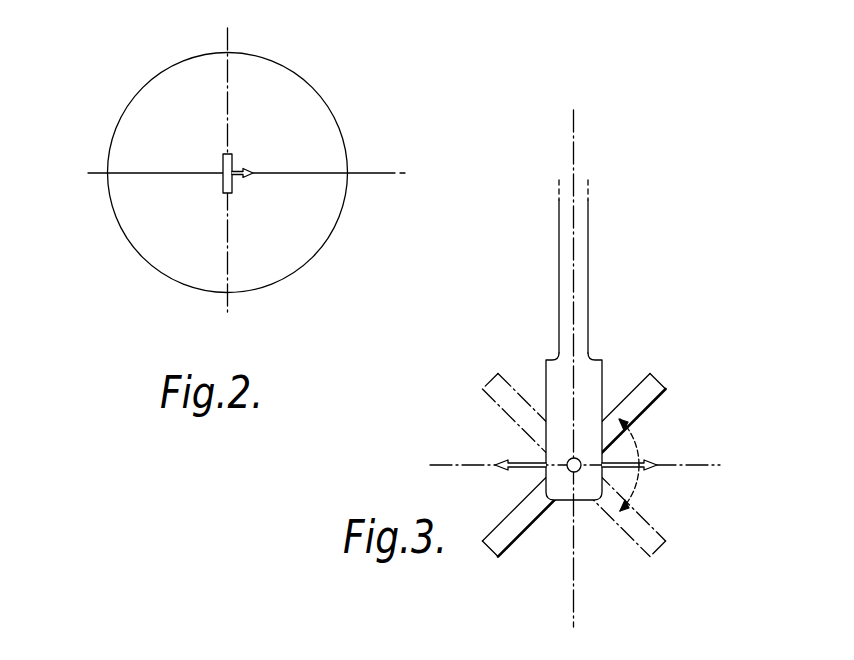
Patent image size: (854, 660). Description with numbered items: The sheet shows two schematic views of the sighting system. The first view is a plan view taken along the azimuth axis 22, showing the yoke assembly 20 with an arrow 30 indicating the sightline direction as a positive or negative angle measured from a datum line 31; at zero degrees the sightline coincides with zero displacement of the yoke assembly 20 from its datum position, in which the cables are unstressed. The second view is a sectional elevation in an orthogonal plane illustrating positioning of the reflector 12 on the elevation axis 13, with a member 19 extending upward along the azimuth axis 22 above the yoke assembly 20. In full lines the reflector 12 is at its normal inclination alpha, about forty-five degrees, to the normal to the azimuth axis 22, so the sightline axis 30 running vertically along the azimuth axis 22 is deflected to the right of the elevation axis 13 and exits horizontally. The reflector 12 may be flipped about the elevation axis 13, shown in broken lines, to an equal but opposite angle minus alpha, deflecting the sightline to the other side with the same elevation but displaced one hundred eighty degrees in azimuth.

In FIG. 3, the reflector 12 is at (660, 378).
In FIG. 3, the elevation axis 13 is at (572, 473).
In FIG. 3, the shaft / stem 19 is at (585, 281).
In FIG. 2, the yoke assembly 20 is at (228, 197).
In FIG. 3, the yoke assembly 20 is at (528, 338).
In FIG. 2, the azimuth axis 22 is at (224, 176).
In FIG. 3, the azimuth axis 22 is at (574, 150).
In FIG. 2, the sightline 30 is at (238, 167).
In FIG. 3, the sightline 30 is at (640, 470).
In FIG. 2, the datum line 31 is at (367, 174).